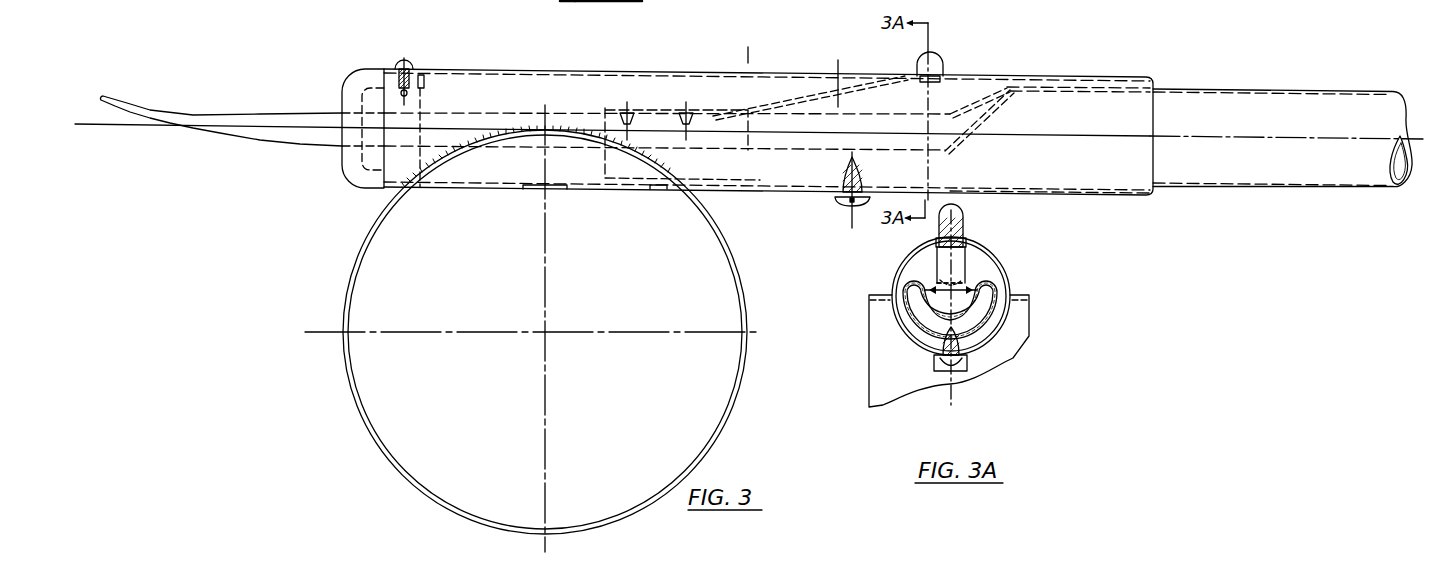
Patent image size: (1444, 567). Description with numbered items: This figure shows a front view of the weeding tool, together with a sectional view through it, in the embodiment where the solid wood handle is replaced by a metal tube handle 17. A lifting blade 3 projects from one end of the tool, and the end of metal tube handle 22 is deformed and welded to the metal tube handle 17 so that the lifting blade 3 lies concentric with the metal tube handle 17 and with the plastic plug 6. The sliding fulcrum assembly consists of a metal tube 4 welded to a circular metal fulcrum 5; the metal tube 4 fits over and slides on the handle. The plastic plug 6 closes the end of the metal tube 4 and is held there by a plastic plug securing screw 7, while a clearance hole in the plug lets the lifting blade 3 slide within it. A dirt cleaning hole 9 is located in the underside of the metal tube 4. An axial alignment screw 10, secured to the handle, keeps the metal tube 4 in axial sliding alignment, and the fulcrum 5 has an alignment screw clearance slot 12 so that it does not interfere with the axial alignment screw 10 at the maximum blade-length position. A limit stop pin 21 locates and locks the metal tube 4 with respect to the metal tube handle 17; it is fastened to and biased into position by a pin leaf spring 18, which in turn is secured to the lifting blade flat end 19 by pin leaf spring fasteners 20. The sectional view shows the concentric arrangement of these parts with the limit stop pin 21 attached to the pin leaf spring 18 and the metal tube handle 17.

In FIG. 3, the lifting blade 3 is at (232, 115).
In FIG. 3A, the lifting blade 3 is at (943, 305).
In FIG. 3, the metal tube 4 is at (470, 70).
In FIG. 3A, the metal tube 4 is at (900, 267).
In FIG. 3, the circular metal fulcrum 5 is at (347, 270).
In FIG. 3A, the circular metal fulcrum 5 is at (869, 323).
In FIG. 3, the plastic plug 6 is at (357, 72).
In FIG. 3, the plastic plug securing screw 7 is at (397, 58).
In FIG. 3, the dirt cleaning hole 9 is at (514, 0).
In FIG. 3, the axial alignment screw 10 is at (860, 206).
In FIG. 3A, the axial alignment screw 10 is at (935, 371).
In FIG. 3, the alignment screw clearance slot 12 is at (700, 202).
In FIG. 3A, the alignment screw clearance slot 12 is at (967, 370).
In FIG. 3, the metal tube handle 17 is at (1228, 90).
In FIG. 3A, the metal tube handle 17 is at (900, 280).
In FIG. 3, the pin leaf spring 18 is at (815, 98).
In FIG. 3A, the pin leaf spring 18 is at (967, 263).
In FIG. 3, the lifting blade flat end 19 is at (743, 118).
In FIG. 3, the pin leaf spring fasteners 20 is at (687, 113).
In FIG. 3, the limit stop pin 21 is at (940, 53).
In FIG. 3A, the limit stop pin 21 is at (963, 228).
In FIG. 3A, the end of metal tube handle 22 is at (988, 281).